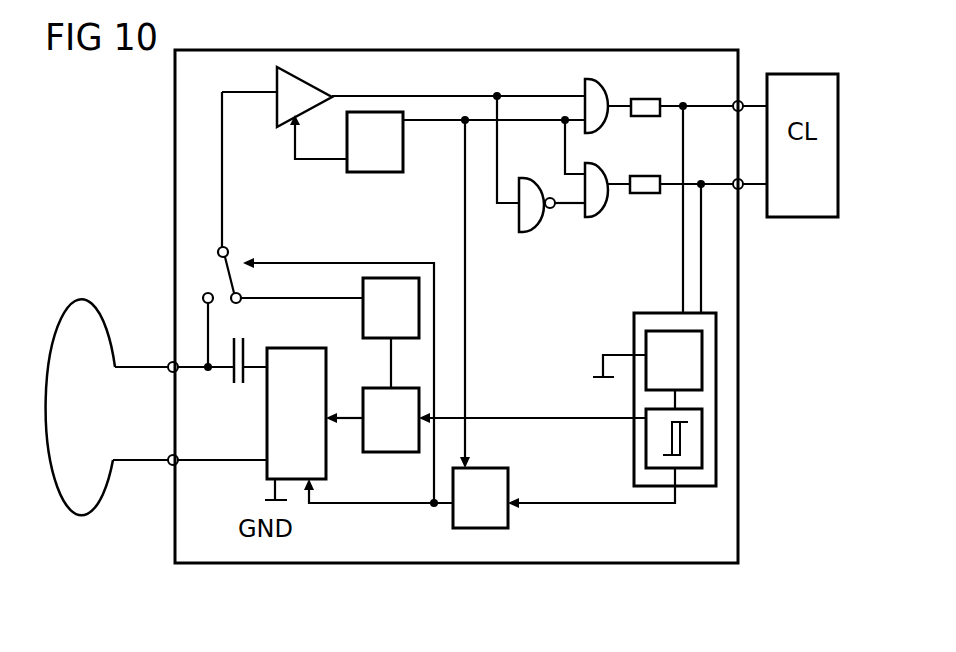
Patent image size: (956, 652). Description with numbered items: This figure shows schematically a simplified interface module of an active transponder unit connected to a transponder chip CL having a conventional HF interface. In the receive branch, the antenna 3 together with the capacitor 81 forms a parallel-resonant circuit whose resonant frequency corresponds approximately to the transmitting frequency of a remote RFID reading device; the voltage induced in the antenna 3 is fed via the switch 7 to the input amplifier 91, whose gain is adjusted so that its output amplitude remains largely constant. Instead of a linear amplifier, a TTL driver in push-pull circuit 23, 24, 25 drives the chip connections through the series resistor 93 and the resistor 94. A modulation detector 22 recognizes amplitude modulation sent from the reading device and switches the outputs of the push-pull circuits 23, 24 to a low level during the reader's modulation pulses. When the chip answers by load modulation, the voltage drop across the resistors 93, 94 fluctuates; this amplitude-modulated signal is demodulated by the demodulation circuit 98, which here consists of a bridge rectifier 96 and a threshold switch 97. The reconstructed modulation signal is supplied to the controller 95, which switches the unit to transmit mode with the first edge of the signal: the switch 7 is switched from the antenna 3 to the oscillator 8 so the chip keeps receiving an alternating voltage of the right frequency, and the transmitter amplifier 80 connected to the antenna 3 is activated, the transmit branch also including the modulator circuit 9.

The antenna 3 is at (49, 407).
The switch 7 is at (218, 250).
The oscillator 8 is at (384, 321).
The modulator circuit 9 is at (384, 433).
The modulation detector 22 is at (361, 155).
The push-pull circuit 23 is at (582, 80).
The push-pull circuit 24 is at (590, 217).
The push-pull circuit 25 is at (530, 232).
The transmitter amplifier 80 is at (283, 381).
The capacitor 81 is at (231, 377).
The input amplifier 91 is at (283, 106).
The series resistor 93 is at (640, 98).
The resistor 94 is at (635, 193).
The controller 95 is at (467, 511).
The bridge rectifier 96 is at (661, 373).
The threshold switch 97 is at (643, 440).
The demodulation circuit 98 is at (634, 328).